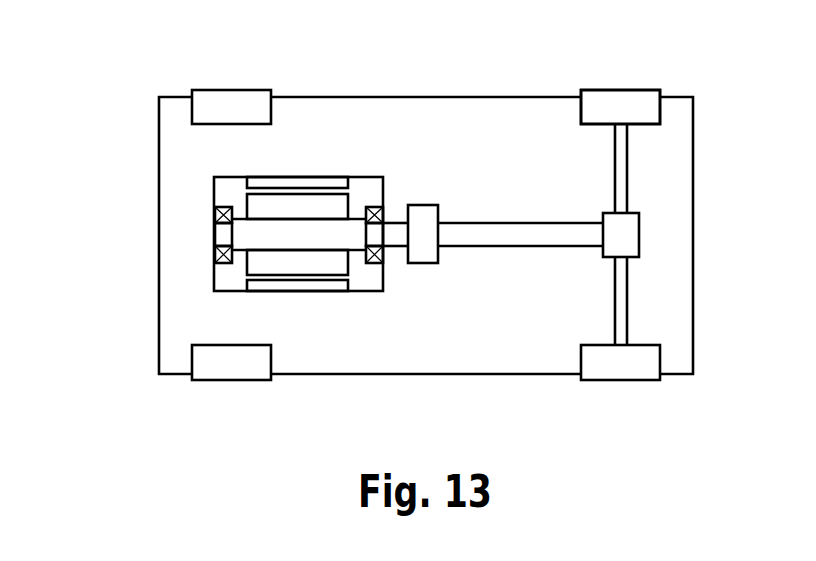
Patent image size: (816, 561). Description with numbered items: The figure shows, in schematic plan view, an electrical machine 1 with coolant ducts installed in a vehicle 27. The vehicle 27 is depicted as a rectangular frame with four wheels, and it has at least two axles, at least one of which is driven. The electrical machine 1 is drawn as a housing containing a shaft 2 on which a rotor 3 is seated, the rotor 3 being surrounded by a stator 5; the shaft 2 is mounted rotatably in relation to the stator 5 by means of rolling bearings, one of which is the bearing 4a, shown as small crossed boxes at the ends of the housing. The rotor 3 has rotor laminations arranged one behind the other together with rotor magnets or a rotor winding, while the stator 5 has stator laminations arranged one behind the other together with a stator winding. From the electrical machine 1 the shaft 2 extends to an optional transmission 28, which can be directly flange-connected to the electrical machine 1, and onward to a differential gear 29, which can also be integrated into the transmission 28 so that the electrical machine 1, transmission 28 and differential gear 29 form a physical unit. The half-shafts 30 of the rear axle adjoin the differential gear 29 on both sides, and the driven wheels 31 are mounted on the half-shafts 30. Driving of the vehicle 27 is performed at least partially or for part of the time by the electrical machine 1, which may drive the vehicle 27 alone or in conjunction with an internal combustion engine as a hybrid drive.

The vehicle 27 is at (105, 73).
The electrical machine 1 is at (202, 188).
The shaft 2 is at (215, 235).
The bearing 4a is at (215, 253).
The rotor 3 is at (262, 258).
The stator 5 is at (273, 285).
The transmission 28 is at (424, 215).
The differential gear 29 is at (627, 240).
The half-shafts 30 is at (622, 287).
The driven wheels 31 is at (617, 107).